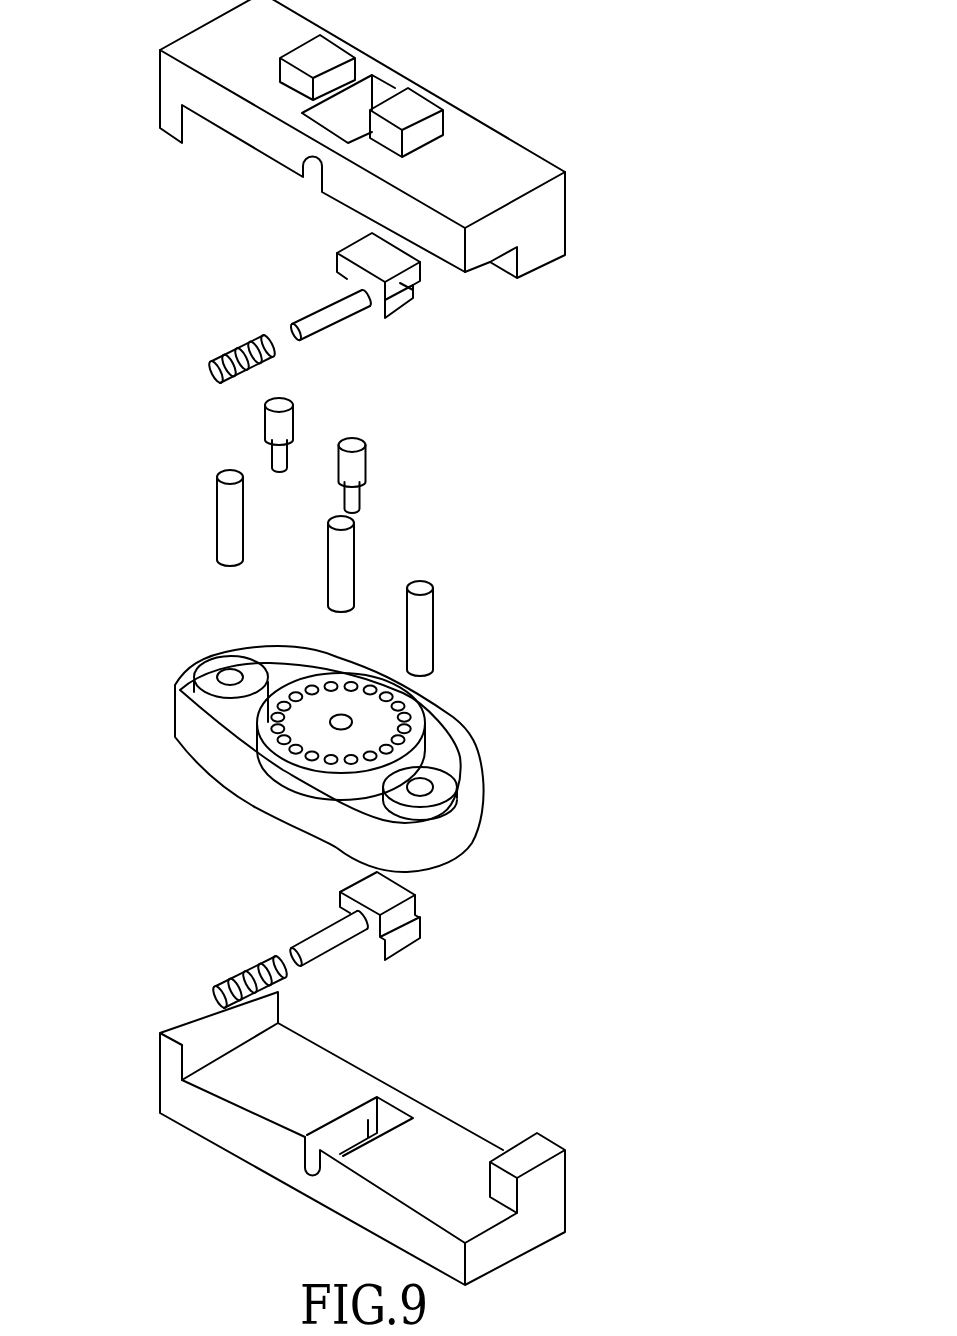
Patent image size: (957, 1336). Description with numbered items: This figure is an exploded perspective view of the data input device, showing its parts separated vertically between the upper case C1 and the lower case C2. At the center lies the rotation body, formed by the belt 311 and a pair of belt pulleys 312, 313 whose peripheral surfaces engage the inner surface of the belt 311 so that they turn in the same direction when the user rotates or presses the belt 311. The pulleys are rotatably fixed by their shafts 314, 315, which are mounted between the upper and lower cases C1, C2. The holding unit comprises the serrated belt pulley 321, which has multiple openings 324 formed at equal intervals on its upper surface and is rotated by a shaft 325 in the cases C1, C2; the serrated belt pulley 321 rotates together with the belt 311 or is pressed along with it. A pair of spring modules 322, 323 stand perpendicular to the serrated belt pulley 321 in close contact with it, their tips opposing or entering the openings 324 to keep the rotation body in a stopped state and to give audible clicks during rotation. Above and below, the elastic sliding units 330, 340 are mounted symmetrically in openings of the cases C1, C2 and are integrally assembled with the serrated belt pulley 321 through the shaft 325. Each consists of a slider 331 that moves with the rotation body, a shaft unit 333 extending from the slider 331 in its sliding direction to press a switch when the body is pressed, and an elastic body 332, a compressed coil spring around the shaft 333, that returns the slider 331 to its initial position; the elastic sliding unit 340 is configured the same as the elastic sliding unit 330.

The upper case C1 is at (477, 150).
The lower case C2 is at (252, 1138).
The elastic sliding unit 330 is at (354, 293).
The slider 331 is at (414, 288).
The elastic body 332 is at (212, 360).
The shaft unit 333 is at (325, 311).
The elastic sliding unit 340 is at (442, 909).
The belt 311 is at (462, 832).
The belt pulley 312 is at (210, 668).
The belt pulley 313 is at (442, 782).
The shaft 314 is at (228, 505).
The shaft 315 is at (427, 622).
The serrated belt pulley 321 is at (373, 725).
The spring module 322 is at (350, 465).
The spring module 323 is at (278, 452).
The openings 324 is at (330, 684).
The shaft 325 is at (345, 545).